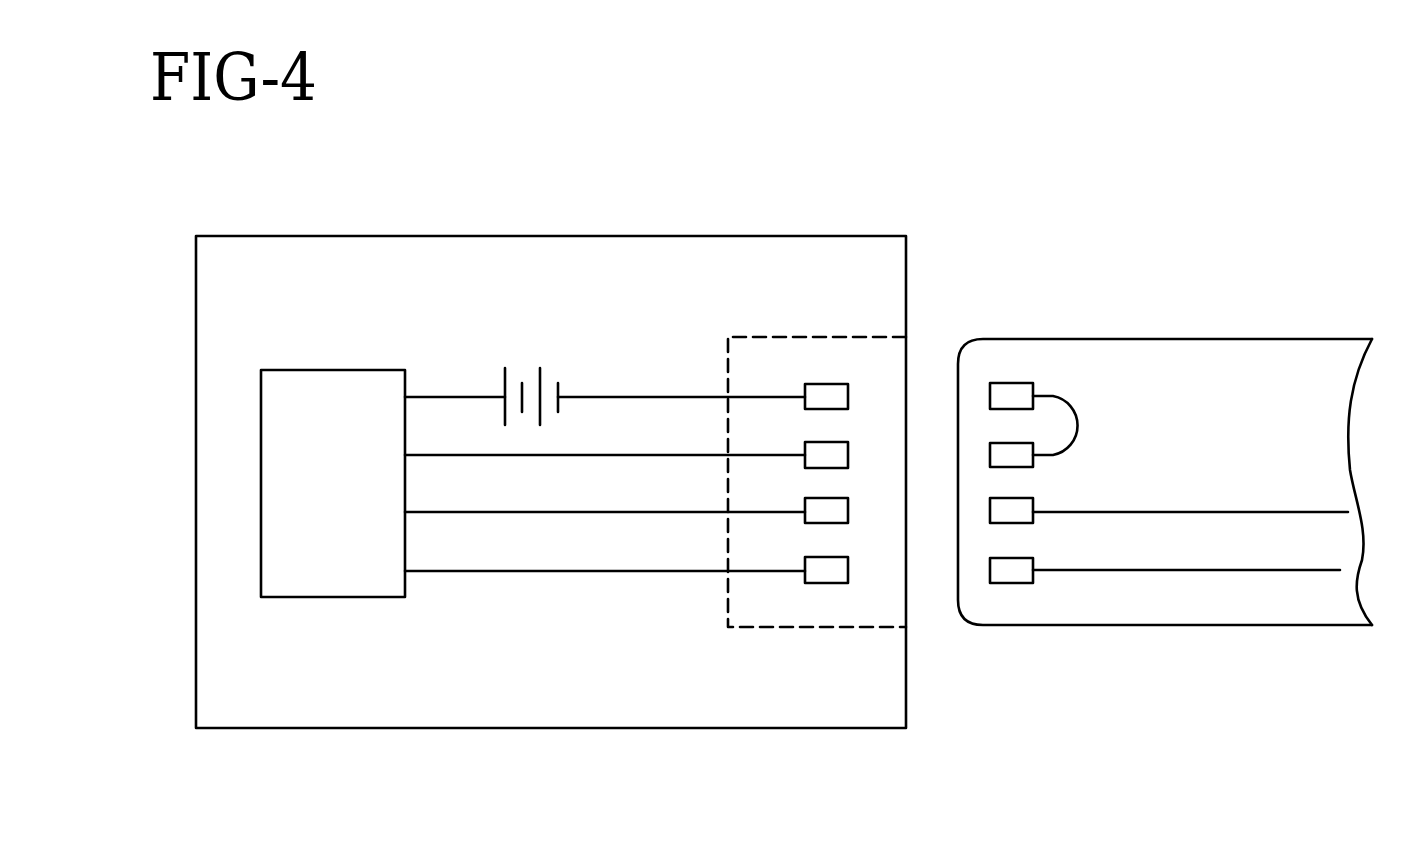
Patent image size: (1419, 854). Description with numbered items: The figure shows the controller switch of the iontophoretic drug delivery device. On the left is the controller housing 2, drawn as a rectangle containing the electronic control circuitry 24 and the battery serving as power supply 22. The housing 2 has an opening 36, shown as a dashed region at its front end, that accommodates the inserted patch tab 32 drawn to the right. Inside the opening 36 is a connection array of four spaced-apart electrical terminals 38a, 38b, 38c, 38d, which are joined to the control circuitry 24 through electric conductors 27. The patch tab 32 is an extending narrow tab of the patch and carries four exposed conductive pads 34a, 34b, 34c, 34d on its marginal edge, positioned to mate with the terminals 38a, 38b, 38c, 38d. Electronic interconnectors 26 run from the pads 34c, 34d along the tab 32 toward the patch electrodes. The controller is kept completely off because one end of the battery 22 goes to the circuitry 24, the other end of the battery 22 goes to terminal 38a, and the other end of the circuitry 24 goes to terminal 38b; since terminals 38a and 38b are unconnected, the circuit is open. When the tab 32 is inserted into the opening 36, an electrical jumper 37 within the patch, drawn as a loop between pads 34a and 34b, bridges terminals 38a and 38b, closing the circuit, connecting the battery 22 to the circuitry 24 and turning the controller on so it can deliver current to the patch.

The controller housing 2 is at (636, 728).
The power supply 22 is at (540, 368).
The electronic control circuitry 24 is at (317, 370).
The electronic interconnectors 26 is at (1348, 512).
The electric conductors 27 is at (443, 512).
The patch tab 32 is at (1232, 625).
The patch tab pad 34a is at (1010, 383).
The patch tab pad 34b is at (990, 452).
The patch tab pad 34c is at (990, 510).
The patch tab pad 34d is at (1010, 583).
The opening 36 is at (906, 265).
The electrical jumper 37 is at (1083, 425).
The electrical terminal 38a is at (805, 390).
The electrical terminal 38b is at (848, 452).
The electrical terminal 38c is at (848, 508).
The electrical terminal 38d is at (805, 575).